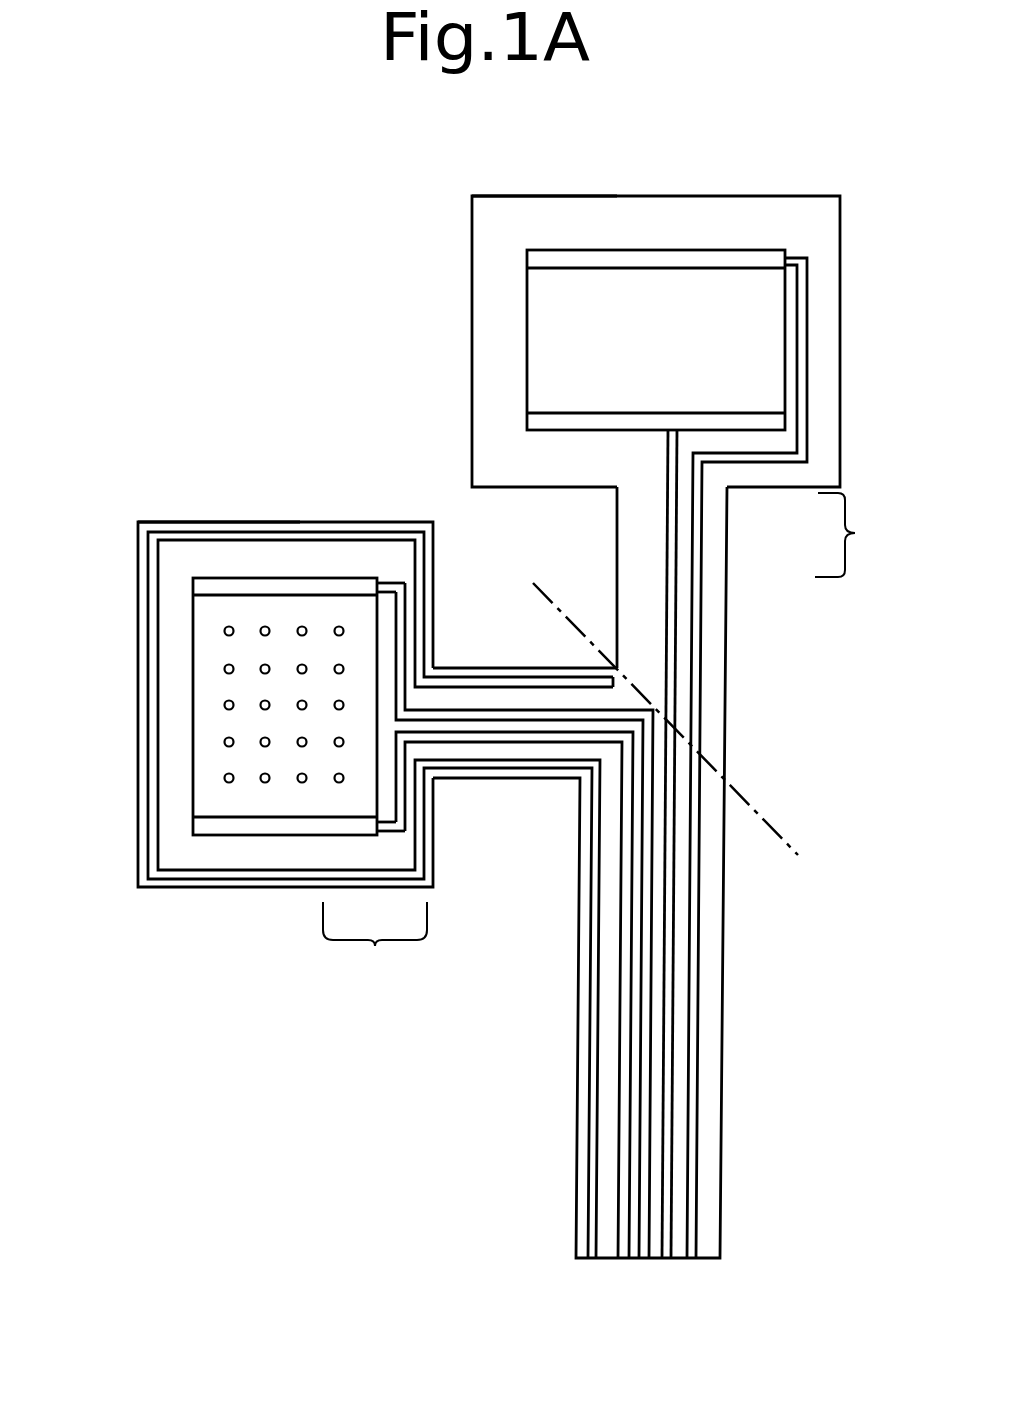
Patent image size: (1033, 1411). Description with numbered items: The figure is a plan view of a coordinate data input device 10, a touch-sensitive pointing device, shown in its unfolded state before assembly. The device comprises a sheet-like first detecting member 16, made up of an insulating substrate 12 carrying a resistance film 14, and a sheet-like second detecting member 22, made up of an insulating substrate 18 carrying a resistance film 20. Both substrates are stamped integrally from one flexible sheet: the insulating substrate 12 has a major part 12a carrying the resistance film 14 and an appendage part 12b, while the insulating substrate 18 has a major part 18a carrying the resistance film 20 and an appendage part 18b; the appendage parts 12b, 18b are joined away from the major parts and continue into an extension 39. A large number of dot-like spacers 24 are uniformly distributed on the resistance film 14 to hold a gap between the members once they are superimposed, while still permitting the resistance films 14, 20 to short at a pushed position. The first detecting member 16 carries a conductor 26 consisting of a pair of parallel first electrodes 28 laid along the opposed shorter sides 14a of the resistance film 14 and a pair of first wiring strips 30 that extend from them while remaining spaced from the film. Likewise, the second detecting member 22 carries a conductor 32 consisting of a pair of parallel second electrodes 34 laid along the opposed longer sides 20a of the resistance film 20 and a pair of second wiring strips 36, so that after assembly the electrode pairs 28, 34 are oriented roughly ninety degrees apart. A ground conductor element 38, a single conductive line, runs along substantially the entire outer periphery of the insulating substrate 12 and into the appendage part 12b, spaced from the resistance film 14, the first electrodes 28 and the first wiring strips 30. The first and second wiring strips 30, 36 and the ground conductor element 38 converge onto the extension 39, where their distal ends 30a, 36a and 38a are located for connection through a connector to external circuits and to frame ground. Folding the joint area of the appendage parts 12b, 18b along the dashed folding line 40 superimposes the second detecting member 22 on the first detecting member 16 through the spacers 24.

The coordinate data input device 10 is at (303, 318).
The insulating substrate 12 is at (282, 558).
The major part 12a is at (173, 553).
The appendage part 12b is at (475, 700).
The resistance film 14 is at (205, 797).
The shorter sides 14a is at (223, 597).
The first detecting member 16 is at (216, 510).
The insulating substrate 18 is at (765, 228).
The major part 18a is at (537, 228).
The appendage part 18b is at (632, 592).
The resistance film 20 is at (540, 330).
The longer sides 20a is at (585, 268).
The second detecting member 22 is at (462, 262).
The spacers 24 is at (262, 636).
The conductor 26 is at (375, 943).
The first electrodes 28 is at (332, 587).
The first wiring strips 30 is at (385, 587).
The distal ends 30a is at (643, 1253).
The conductor 32 is at (854, 535).
The second electrodes 34 is at (693, 263).
The second wiring strips 36 is at (802, 323).
The distal ends 36a is at (668, 1253).
The ground conductor element 38 is at (237, 873).
The distal ends 38a is at (592, 1233).
The extension 39 is at (725, 1015).
The folding line 40 is at (790, 845).